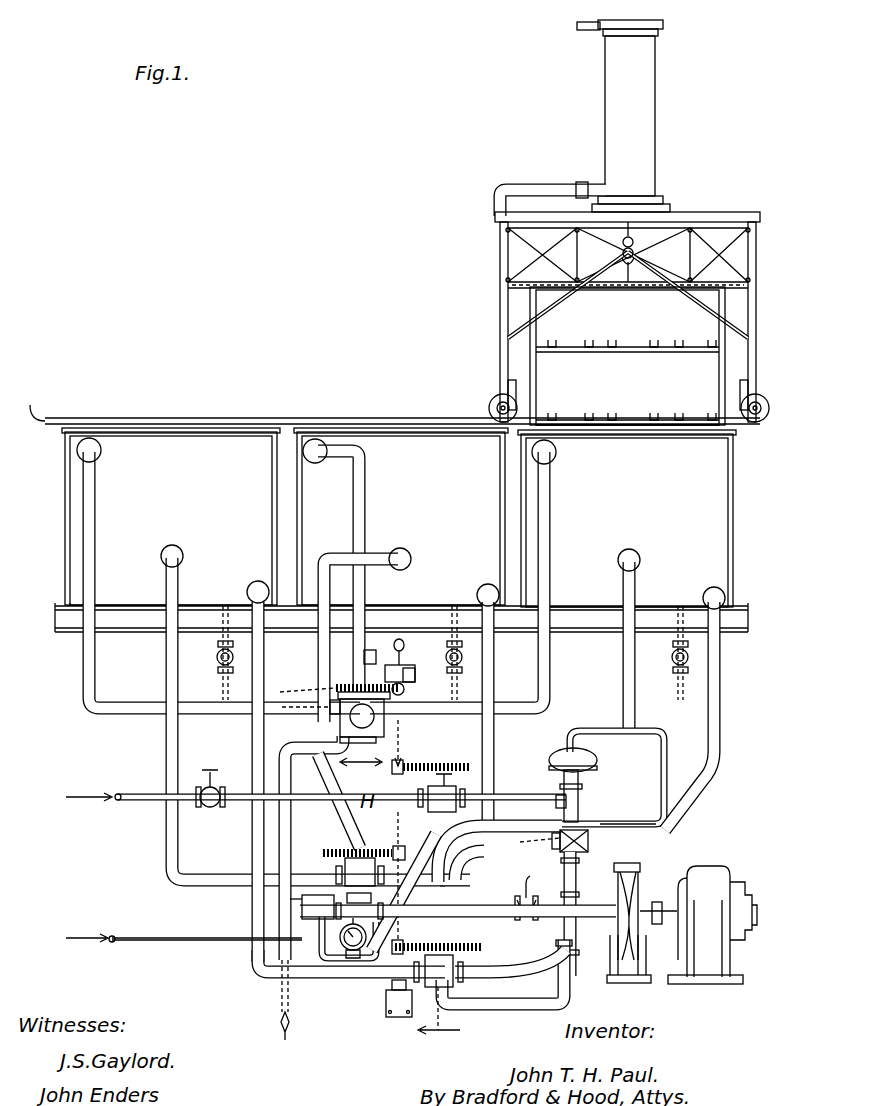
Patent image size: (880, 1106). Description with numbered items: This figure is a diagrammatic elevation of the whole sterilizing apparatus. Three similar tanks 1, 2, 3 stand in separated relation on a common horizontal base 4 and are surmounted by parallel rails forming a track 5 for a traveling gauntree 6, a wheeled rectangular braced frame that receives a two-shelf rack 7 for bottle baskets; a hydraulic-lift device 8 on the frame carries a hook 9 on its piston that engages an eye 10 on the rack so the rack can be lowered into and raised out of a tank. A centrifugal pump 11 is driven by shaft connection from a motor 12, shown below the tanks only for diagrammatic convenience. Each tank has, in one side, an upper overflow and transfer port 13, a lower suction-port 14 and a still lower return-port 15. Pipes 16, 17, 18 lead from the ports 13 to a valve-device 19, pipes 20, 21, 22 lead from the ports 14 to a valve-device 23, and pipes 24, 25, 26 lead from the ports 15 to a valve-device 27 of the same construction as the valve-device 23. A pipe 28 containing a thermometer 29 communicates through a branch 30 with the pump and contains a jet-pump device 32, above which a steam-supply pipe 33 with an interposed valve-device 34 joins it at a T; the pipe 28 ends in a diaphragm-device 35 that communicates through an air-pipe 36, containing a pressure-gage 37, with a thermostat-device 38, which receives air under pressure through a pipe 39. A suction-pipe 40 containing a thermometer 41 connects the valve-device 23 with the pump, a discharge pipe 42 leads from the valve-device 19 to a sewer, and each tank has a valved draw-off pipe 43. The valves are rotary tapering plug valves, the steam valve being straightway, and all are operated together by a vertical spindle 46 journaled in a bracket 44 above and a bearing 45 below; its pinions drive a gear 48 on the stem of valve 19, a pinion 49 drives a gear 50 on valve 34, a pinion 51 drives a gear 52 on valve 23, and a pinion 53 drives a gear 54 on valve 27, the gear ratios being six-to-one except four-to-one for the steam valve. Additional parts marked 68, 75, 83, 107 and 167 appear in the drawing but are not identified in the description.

The tank 1 is at (627, 518).
The tank 2 is at (401, 516).
The tank 3 is at (171, 516).
The horizontal base 4 is at (56, 617).
The track 5 is at (52, 418).
The traveling gauntree 6 is at (553, 184).
The two-shelf rack 7 is at (538, 390).
The hydraulic-lift device 8 is at (616, 76).
The hook 9 is at (660, 224).
The eye 10 is at (640, 264).
The centrifugal pump 11 is at (634, 902).
The motor 12 is at (710, 866).
The overflow and transfer port 13 is at (91, 440).
The suction-port 14 is at (180, 552).
The return-port 15 is at (254, 586).
The pipe 16 is at (552, 531).
The pipe 17 is at (354, 514).
The pipe 18 is at (96, 508).
The valve-device 19 is at (362, 732).
The pipe 20 is at (622, 583).
The pipe 21 is at (330, 562).
The pipe 22 is at (166, 590).
The valve-device 23 is at (453, 741).
The pipe 24 is at (722, 698).
The pipe 25 is at (494, 690).
The pipe 26 is at (262, 670).
The valve-device 27 is at (432, 990).
The pipe 28 is at (504, 952).
The thermometer 29 is at (564, 968).
The branch 30 is at (604, 826).
The jet-pump device 32 is at (562, 836).
The steam-supply pipe 33 is at (130, 794).
The valve-device 34 is at (452, 796).
The diaphragm-device 35 is at (560, 760).
The air-pipe 36 is at (668, 776).
The pressure-gage 37 is at (342, 947).
The thermostat-device 38 is at (300, 897).
The pipe 39 is at (158, 932).
The suction-pipe 40 is at (424, 904).
The thermometer 41 is at (416, 680).
The discharge pipe 42 is at (280, 824).
The valved draw-off pipe 43 is at (220, 667).
The bracket 44 is at (407, 660).
The bearing 45 is at (386, 1002).
The vertical spindle 46 is at (400, 732).
The gear 48 is at (338, 686).
The pinion 49 is at (418, 762).
The gear 50 is at (436, 754).
The pinion 51 is at (400, 842).
The gear 52 is at (350, 846).
The pinion 53 is at (440, 952).
The gear 54 is at (454, 956).
The steam valve 68 is at (208, 782).
The jet pump pipe 75 is at (577, 892).
The pipe 83 is at (262, 968).
The valve 107 is at (374, 650).
The pipe 167 is at (552, 840).